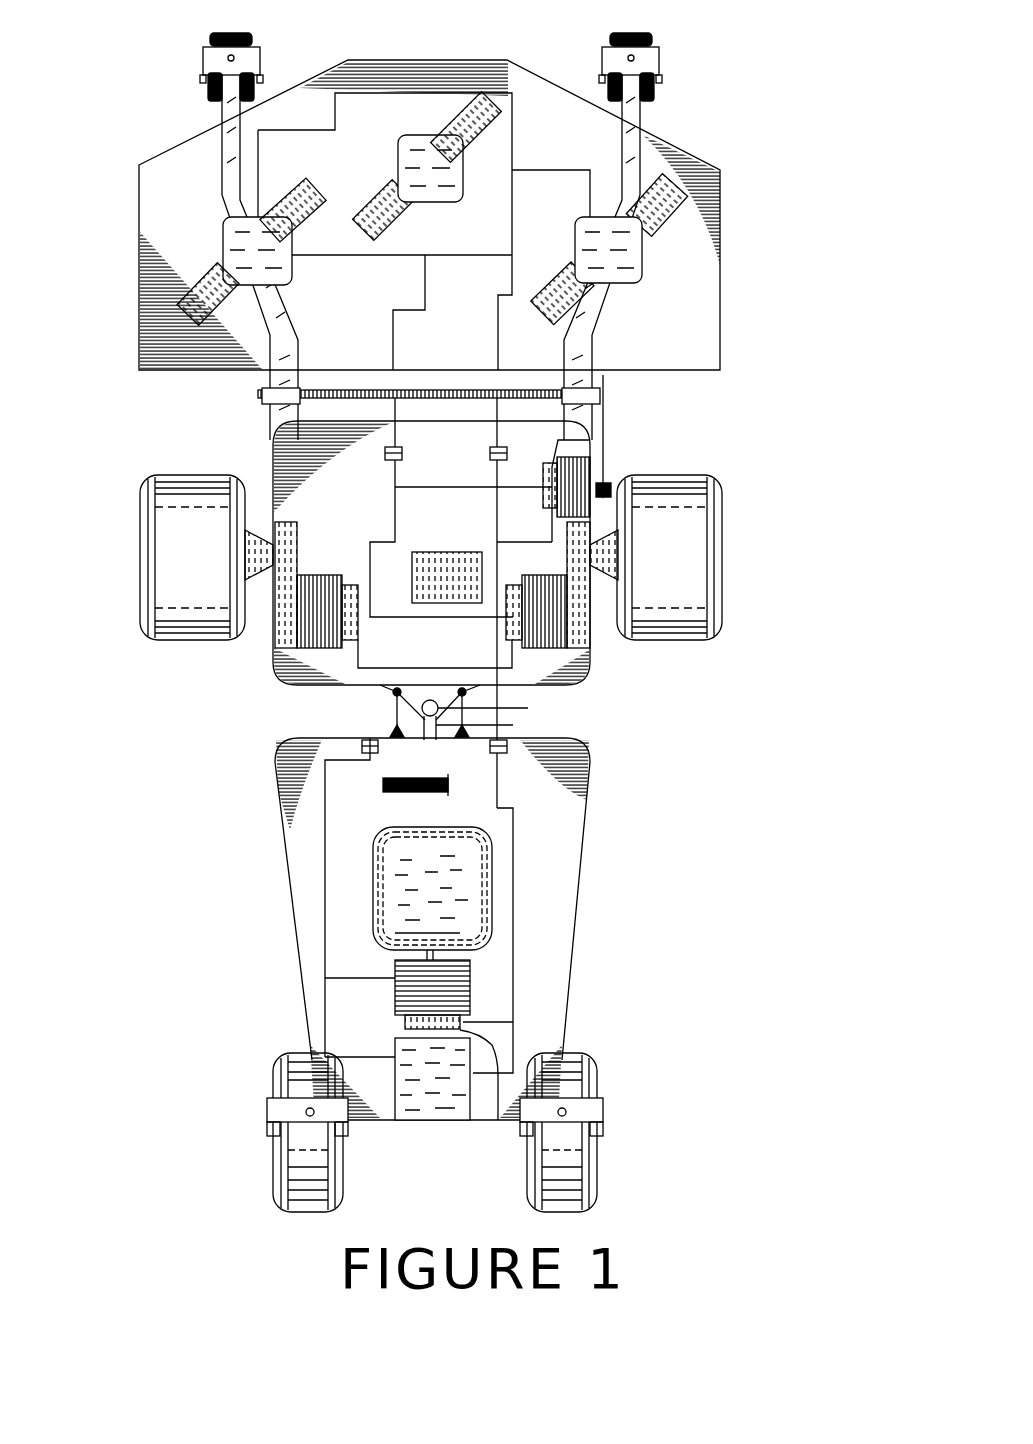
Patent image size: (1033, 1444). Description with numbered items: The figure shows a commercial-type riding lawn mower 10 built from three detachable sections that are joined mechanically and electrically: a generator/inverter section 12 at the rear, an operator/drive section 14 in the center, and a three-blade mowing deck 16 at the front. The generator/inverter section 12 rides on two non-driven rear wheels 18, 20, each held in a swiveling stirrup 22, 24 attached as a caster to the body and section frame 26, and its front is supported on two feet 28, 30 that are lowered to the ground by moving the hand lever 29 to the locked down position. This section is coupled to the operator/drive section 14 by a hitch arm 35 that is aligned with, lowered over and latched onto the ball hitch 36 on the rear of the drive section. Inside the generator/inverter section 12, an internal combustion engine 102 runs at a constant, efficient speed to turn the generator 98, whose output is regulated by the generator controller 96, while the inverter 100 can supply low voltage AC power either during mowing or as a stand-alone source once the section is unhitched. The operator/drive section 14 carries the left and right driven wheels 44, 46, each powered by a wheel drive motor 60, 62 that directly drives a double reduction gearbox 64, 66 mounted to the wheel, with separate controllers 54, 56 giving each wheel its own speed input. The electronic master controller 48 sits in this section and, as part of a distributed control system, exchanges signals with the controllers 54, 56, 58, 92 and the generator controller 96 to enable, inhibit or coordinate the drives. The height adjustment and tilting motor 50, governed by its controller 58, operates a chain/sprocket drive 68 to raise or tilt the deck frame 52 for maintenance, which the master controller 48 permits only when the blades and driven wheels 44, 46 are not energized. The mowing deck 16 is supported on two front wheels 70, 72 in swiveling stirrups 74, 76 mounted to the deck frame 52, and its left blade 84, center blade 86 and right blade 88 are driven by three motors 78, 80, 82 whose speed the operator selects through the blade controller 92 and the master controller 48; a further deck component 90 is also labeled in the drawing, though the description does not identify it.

The riding lawn mower 10 is at (663, 1160).
The generator/inverter section 12 is at (592, 882).
The operator/drive section 14 is at (353, 508).
The mowing deck 16 is at (728, 321).
The rear wheel 18 is at (277, 1073).
The rear wheel 20 is at (588, 1050).
The swiveling stirrup 22 is at (273, 1110).
The swiveling stirrup 24 is at (597, 1112).
The section frame 26 is at (293, 790).
The foot 28 is at (397, 735).
The hand lever 29 is at (387, 790).
The foot 30 is at (590, 742).
The hitch arm 35 is at (513, 725).
The ball hitch 36 is at (528, 708).
The driven wheel 44 is at (150, 642).
The driven wheel 46 is at (720, 585).
The master controller 48 is at (540, 668).
The height adjustment and tilting motor 50 is at (618, 478).
The deck frame 52 is at (608, 337).
The controller 54 is at (343, 660).
The controller 56 is at (450, 597).
The controller 58 is at (560, 439).
The wheel drive motor 60 is at (330, 625).
The wheel drive motor 62 is at (600, 673).
The double reduction gearbox 64 is at (312, 595).
The double reduction gearbox 66 is at (590, 650).
The chain/sprocket drive 68 is at (607, 403).
The wheel 70 is at (210, 82).
The wheel 72 is at (648, 93).
The swiveling stirrup 74 is at (253, 54).
The swiveling stirrup 76 is at (648, 57).
The motor 78 is at (227, 222).
The motor 80 is at (397, 138).
The motor 82 is at (643, 262).
The left blade 84 is at (227, 267).
The center blade 86 is at (477, 100).
The right blade 88 is at (665, 192).
The left mounting block 90 is at (470, 172).
The blade controller 92 is at (427, 137).
The generator controller 96 is at (508, 1100).
The generator 98 is at (395, 993).
The inverter 100 is at (437, 1110).
The internal combustion engine 102 is at (377, 910).